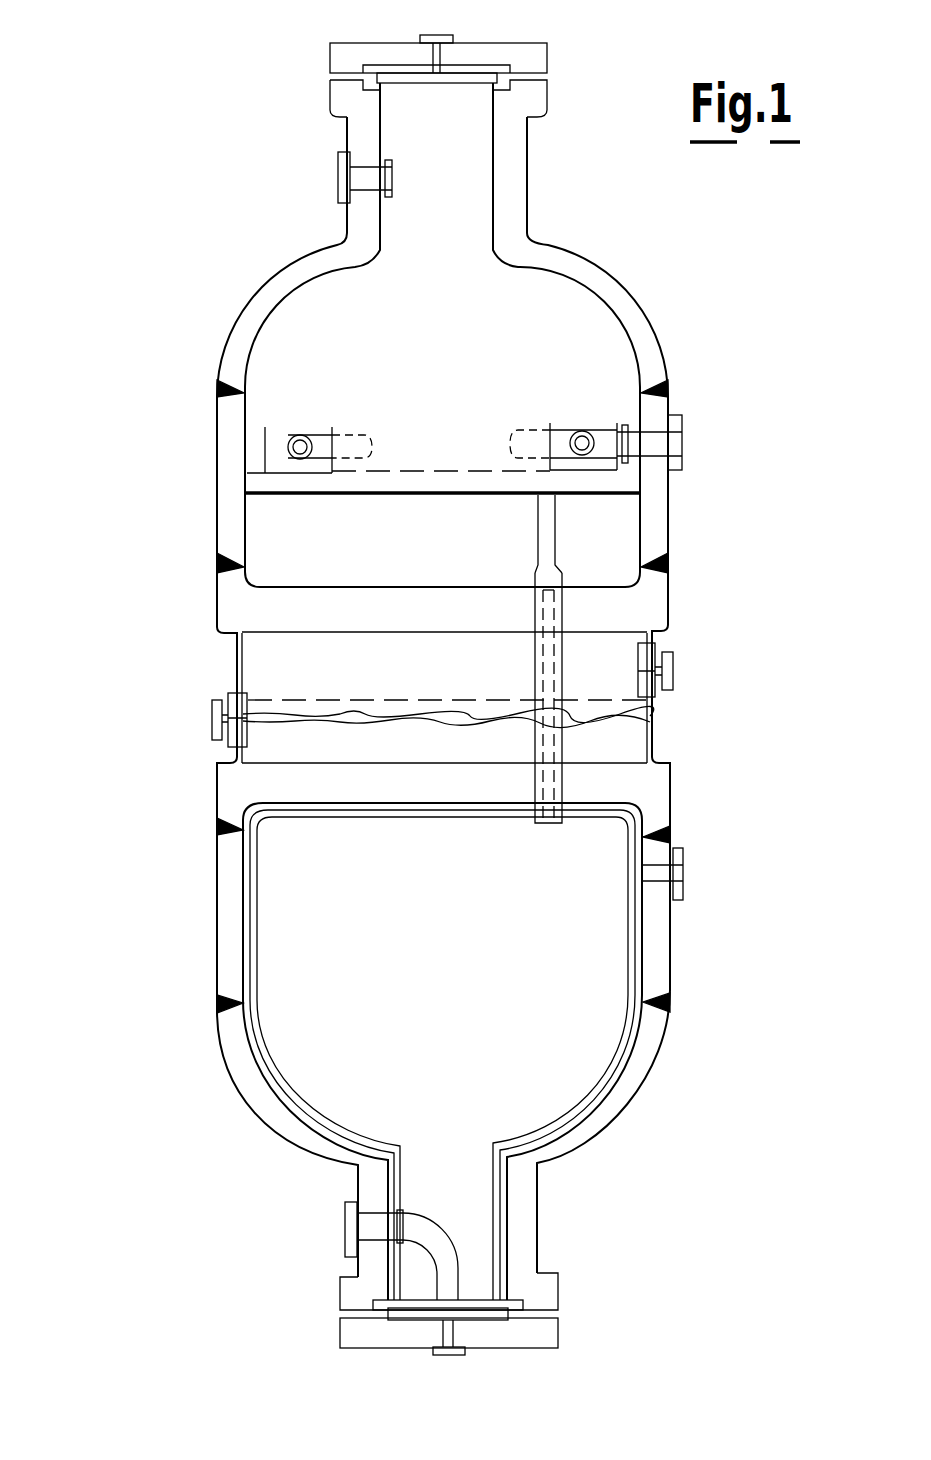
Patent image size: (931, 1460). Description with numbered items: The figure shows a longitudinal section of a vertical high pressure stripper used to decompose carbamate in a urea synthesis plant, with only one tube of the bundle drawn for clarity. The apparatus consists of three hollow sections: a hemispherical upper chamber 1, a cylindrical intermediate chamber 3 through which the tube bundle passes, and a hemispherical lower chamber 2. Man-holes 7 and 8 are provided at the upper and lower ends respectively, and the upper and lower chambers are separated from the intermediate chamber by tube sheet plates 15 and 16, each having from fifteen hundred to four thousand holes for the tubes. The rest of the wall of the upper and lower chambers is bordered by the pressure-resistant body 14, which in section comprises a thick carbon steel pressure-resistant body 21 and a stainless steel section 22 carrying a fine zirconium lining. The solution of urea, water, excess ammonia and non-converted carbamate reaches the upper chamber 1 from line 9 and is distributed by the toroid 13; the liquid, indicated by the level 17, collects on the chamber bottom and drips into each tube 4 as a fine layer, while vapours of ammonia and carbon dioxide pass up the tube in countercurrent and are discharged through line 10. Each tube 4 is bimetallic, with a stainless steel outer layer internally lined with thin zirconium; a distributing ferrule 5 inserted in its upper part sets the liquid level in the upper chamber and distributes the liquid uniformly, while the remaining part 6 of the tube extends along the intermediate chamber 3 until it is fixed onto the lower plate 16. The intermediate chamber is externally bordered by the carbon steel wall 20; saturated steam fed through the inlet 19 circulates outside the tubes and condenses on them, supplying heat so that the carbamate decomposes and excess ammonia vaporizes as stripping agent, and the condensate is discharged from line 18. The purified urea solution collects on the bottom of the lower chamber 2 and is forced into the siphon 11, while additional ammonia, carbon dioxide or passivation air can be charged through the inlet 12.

The upper chamber 1 is at (400, 323).
The lower chamber 2 is at (396, 958).
The intermediate chamber 3 is at (390, 672).
The tube 4 is at (558, 670).
The distributing ferrule 5 is at (547, 530).
The remaining part of tube 6 is at (560, 742).
The upper man-hole 7 is at (483, 53).
The lower man-hole 8 is at (540, 1333).
The feed line 9 is at (650, 447).
The vapour discharge line 10 is at (363, 178).
The siphon 11 is at (373, 1230).
The inlet 12 is at (677, 873).
The toroid 13 is at (520, 433).
The pressure-resistant body 14 is at (232, 493).
The upper tube sheet plate 15 is at (637, 602).
The lower tube sheet plate 16 is at (297, 786).
The liquid level 17 is at (440, 494).
The condensate discharge line 18 is at (212, 720).
The steam inlet 19 is at (673, 673).
The wall 20 is at (237, 672).
The pressure-resistant body 21 is at (353, 812).
The stainless steel section 22 is at (280, 1057).